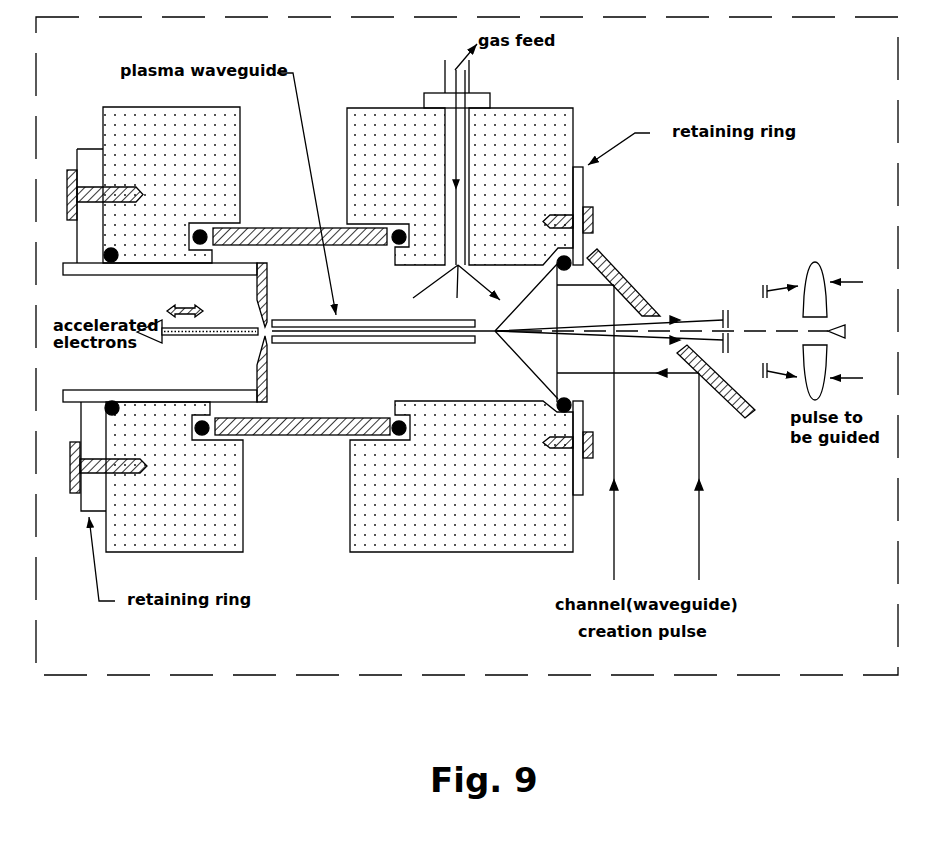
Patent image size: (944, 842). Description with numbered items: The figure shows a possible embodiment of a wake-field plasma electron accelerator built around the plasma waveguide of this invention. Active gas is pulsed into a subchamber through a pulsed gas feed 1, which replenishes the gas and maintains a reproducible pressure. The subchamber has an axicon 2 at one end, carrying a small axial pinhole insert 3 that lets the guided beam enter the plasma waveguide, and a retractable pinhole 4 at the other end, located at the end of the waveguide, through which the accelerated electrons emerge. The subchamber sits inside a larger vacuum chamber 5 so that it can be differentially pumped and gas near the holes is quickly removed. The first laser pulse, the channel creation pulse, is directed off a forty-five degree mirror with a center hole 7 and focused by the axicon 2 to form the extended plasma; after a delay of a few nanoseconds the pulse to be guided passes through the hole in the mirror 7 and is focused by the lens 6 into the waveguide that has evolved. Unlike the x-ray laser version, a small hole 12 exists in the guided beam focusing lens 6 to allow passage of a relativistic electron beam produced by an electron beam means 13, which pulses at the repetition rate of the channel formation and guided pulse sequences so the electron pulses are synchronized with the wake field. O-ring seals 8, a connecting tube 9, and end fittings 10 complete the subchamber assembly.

The pulsed gas feed 1 is at (459, 181).
The axicon 2 is at (565, 363).
The axial pinhole insert 3 is at (498, 342).
The retractable pinhole 4 is at (253, 290).
The vacuum chamber 5 is at (848, 17).
The lens 6 is at (815, 258).
The mirror with center hole 7 is at (617, 258).
The O-ring seals 8 is at (117, 249).
The connecting tube 9 is at (277, 437).
The end fittings 10 is at (208, 527).
The small hole 12 is at (835, 315).
The electron beam means 13 is at (705, 331).